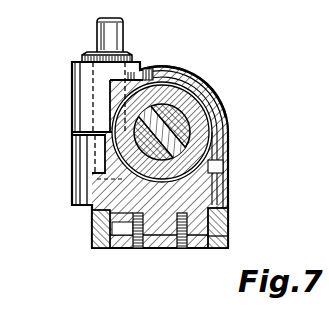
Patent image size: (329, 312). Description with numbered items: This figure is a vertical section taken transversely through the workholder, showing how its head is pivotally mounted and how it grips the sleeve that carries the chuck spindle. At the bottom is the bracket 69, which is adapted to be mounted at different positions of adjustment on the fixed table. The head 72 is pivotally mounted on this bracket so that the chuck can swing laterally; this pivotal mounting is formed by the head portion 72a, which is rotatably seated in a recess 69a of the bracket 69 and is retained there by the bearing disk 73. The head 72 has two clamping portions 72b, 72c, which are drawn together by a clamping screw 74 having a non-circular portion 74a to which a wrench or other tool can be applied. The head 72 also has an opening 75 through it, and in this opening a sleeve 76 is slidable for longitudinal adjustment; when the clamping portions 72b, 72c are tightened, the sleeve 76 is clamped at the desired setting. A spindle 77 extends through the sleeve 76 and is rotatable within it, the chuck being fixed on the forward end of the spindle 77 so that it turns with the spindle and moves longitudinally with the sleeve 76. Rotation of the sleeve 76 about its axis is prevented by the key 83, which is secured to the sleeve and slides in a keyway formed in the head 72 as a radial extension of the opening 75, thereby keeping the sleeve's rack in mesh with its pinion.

The head 72 is at (226, 138).
The head portion 72a is at (152, 250).
The clamping portion 72b is at (72, 87).
The clamping portion 72c is at (80, 155).
The bearing disk 73 is at (206, 250).
The clamping screw 74 is at (95, 112).
The non-circular portion 74a is at (124, 33).
The opening 75 is at (195, 82).
The sleeve 76 is at (226, 161).
The spindle 77 is at (183, 71).
The key 83 is at (215, 110).
The bracket 69 is at (229, 228).
The recess 69a is at (229, 238).